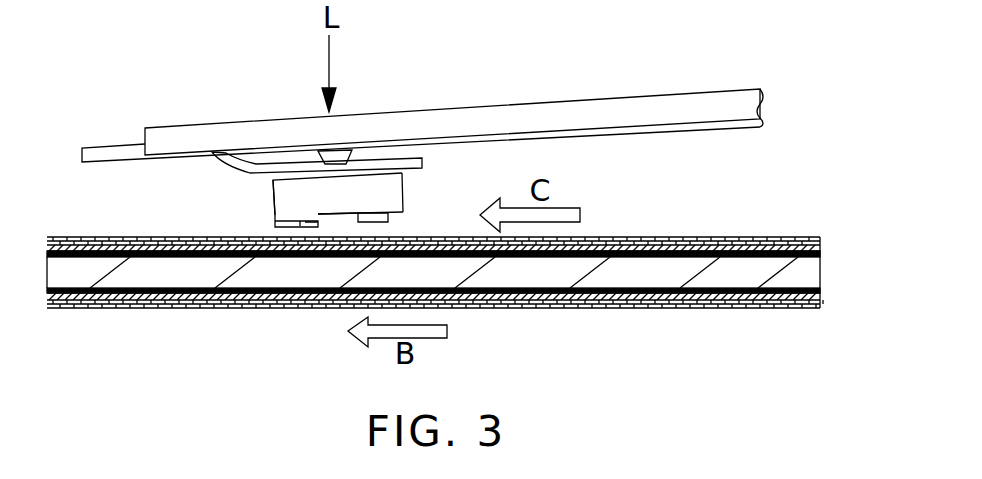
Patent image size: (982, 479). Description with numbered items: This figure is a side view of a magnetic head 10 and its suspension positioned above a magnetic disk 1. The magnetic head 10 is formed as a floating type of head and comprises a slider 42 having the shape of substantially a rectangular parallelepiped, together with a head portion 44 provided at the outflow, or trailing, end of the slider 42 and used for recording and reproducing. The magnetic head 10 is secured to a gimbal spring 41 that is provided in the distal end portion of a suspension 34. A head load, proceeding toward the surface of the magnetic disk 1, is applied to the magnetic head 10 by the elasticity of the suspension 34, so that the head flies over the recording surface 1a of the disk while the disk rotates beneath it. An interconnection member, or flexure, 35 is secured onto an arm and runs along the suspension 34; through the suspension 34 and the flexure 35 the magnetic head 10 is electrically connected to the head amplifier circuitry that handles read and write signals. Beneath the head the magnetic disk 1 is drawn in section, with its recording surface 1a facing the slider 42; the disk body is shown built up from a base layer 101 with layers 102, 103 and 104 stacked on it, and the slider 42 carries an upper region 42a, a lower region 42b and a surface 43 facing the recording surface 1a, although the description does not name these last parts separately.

The magnetic disk 1 is at (775, 220).
The recording surface 1a is at (656, 237).
The magnetic head 10 is at (418, 192).
The suspension 34 is at (622, 110).
The interconnection member (flexure) 35 is at (688, 129).
The gimbal spring 41 is at (410, 158).
The slider 42 is at (308, 190).
The head upper portion 42a is at (406, 177).
The head lower portion 42b is at (274, 213).
The nozzle surface 43 is at (331, 232).
The head portion 44 is at (275, 193).
The base layer 101 is at (711, 280).
The adhesive layer 102 is at (802, 257).
The intermediate layer 103 is at (748, 246).
The surface layer 104 is at (815, 240).